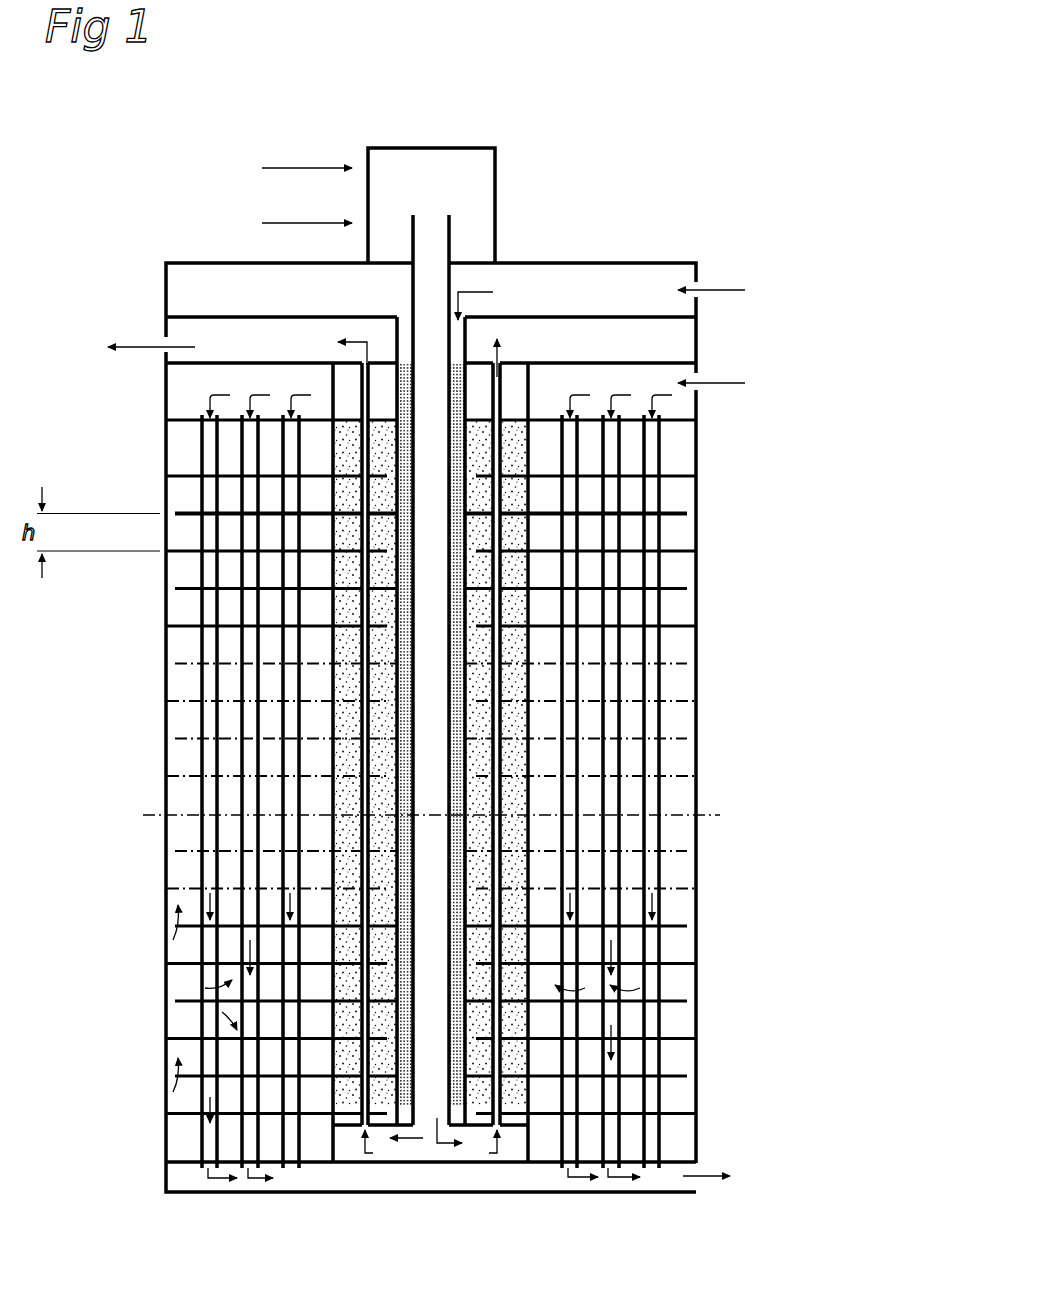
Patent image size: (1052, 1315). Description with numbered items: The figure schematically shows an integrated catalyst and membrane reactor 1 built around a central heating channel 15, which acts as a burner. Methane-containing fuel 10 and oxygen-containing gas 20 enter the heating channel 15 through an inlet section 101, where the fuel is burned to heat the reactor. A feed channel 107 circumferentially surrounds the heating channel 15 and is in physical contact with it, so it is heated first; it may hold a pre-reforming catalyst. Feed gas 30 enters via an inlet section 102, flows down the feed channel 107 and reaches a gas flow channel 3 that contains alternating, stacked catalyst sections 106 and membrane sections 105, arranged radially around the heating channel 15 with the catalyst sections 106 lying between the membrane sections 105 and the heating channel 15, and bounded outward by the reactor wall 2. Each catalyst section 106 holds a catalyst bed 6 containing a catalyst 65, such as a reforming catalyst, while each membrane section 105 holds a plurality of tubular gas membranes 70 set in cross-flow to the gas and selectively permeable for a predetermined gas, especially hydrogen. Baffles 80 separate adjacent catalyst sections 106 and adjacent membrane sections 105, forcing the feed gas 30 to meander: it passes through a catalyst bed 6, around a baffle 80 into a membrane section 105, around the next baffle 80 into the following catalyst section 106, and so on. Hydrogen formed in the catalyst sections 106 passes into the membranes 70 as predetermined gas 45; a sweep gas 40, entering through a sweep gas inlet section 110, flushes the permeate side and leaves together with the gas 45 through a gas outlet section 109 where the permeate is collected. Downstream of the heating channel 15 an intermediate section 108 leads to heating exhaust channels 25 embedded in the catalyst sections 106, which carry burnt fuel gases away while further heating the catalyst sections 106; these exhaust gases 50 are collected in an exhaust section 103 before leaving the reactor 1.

The reactor 1 is at (654, 178).
The fuel 10 is at (311, 168).
The gas 20 is at (286, 223).
The feed gas 30 is at (728, 285).
The sweep gas 40 is at (265, 397).
The predetermined gas 45 is at (208, 1196).
The exhaust gases 50 is at (118, 340).
The inlet section 101 is at (450, 168).
The inlet section 102 is at (571, 296).
The exhaust section 103 is at (520, 330).
The sweep gas inlet section 110 is at (187, 380).
The wall 2 is at (162, 507).
The gas flow channel 3 is at (180, 483).
The catalyst bed 6 is at (513, 535).
The heating channel 15 is at (430, 612).
The heating exhaust channel 25 is at (495, 683).
The catalyst 65 is at (518, 450).
The tubular gas membranes 70 is at (625, 735).
The baffles 80 is at (178, 588).
The membrane sections 105 is at (180, 563).
The catalyst sections 106 is at (347, 702).
The feed channel 107 is at (457, 797).
The intermediate section 108 is at (520, 1153).
The gas outlet section 109 is at (558, 1182).